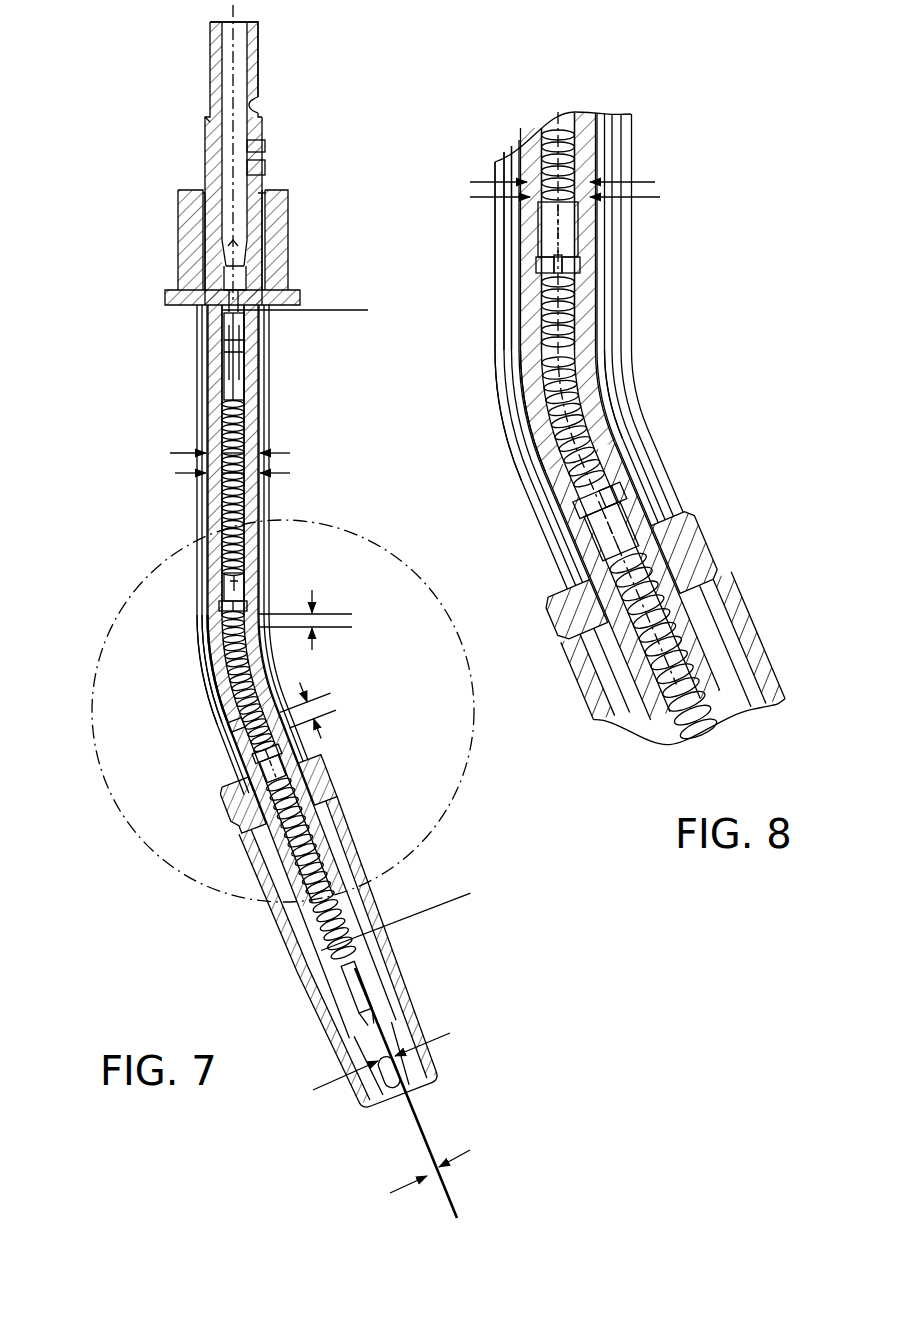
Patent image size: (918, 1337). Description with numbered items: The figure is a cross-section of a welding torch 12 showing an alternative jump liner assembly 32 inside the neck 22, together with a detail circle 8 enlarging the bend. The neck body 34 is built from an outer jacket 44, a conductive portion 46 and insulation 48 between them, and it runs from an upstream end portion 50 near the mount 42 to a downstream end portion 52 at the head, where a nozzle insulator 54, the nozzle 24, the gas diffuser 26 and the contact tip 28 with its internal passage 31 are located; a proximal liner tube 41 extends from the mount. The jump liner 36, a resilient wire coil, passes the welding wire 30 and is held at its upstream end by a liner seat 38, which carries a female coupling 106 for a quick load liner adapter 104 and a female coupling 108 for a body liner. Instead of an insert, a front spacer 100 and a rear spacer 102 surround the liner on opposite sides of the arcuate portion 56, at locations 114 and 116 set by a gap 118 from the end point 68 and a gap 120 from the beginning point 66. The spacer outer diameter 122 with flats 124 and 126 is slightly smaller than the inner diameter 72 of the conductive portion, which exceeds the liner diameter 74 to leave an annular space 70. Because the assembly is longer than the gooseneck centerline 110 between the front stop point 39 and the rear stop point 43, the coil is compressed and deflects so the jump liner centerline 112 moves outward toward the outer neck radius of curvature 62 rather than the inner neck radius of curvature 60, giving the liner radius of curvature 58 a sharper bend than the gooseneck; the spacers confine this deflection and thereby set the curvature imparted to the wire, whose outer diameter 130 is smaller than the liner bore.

In FIG. 7, the detail circle 8 is at (91, 668).
In FIG. 7, the welding torch 12 is at (99, 163).
In FIG. 8, the welding torch 12 is at (745, 128).
In FIG. 7, the neck 22 is at (286, 417).
In FIG. 8, the neck 22 is at (655, 139).
In FIG. 7, the nozzle 24 is at (345, 1046).
In FIG. 7, the gas diffuser 26 is at (350, 895).
In FIG. 7, the contact tip 28 is at (352, 1033).
In FIG. 7, the welding wire 30 is at (403, 1118).
In FIG. 7, the internal passage 31 is at (450, 1033).
In FIG. 7, the jump liner assembly 32 is at (221, 427).
In FIG. 8, the jump liner assembly 32 is at (555, 116).
In FIG. 7, the neck body 34 is at (274, 395).
In FIG. 8, the neck body 34 is at (634, 170).
In FIG. 7, the jump liner 36 is at (221, 533).
In FIG. 8, the jump liner 36 is at (582, 159).
In FIG. 7, the liner seat 38 is at (226, 294).
In FIG. 7, the front stop point 39 is at (456, 890).
In FIG. 7, the proximal tube 41 is at (257, 26).
In FIG. 7, the mount 42 is at (289, 257).
In FIG. 7, the rear stop point 43 is at (342, 314).
In FIG. 7, the outer jacket 44 is at (262, 207).
In FIG. 8, the outer jacket 44 is at (528, 138).
In FIG. 7, the conductive portion 46 is at (258, 88).
In FIG. 8, the conductive portion 46 is at (502, 162).
In FIG. 7, the insulation 48 is at (224, 248).
In FIG. 8, the insulation 48 is at (510, 150).
In FIG. 7, the upstream end portion 50 is at (272, 233).
In FIG. 7, the downstream end portion 52 is at (240, 993).
In FIG. 8, the downstream end portion 52 is at (782, 616).
In FIG. 7, the nozzle insulator 54 is at (340, 797).
In FIG. 7, the arcuate portion 56 is at (200, 692).
In FIG. 7, the liner radius of curvature 58 is at (198, 692).
In FIG. 8, the liner radius of curvature 58 is at (560, 430).
In FIG. 7, the inner neck radius of curvature 60 is at (207, 676).
In FIG. 8, the inner neck radius of curvature 60 is at (613, 322).
In FIG. 7, the outer neck radius of curvature 62 is at (220, 647).
In FIG. 8, the outer neck radius of curvature 62 is at (541, 380).
In FIG. 7, the beginning point 66 is at (352, 627).
In FIG. 7, the end point 68 is at (329, 692).
In FIG. 7, the space 70 is at (244, 423).
In FIG. 8, the space 70 is at (581, 117).
In FIG. 7, the diameter 72 is at (283, 453).
In FIG. 8, the diameter 72 is at (483, 182).
In FIG. 7, the diameter 74 is at (282, 475).
In FIG. 8, the diameter 74 is at (640, 199).
In FIG. 7, the front spacer 100 is at (262, 768).
In FIG. 8, the front spacer 100 is at (575, 508).
In FIG. 7, the rear spacer 102 is at (228, 585).
In FIG. 8, the rear spacer 102 is at (532, 267).
In FIG. 7, the quick load liner adapter 104 is at (223, 367).
In FIG. 7, the female coupling 106 is at (226, 306).
In FIG. 7, the female coupling 108 is at (224, 253).
In FIG. 7, the gooseneck centerline 110 is at (236, 58).
In FIG. 8, the gooseneck centerline 110 is at (632, 357).
In FIG. 7, the jump liner centerline 112 is at (206, 679).
In FIG. 8, the jump liner centerline 112 is at (520, 349).
In FIG. 7, the location 114 is at (336, 710).
In FIG. 7, the location 116 is at (352, 614).
In FIG. 7, the gap 118 is at (322, 736).
In FIG. 7, the gap 120 is at (318, 593).
In FIG. 7, the outer diameter 122 is at (248, 605).
In FIG. 8, the outer diameter 122 is at (583, 267).
In FIG. 7, the flat 124 is at (228, 728).
In FIG. 8, the flat 124 is at (604, 489).
In FIG. 7, the flat 126 is at (235, 581).
In FIG. 8, the flat 126 is at (556, 262).
In FIG. 7, the outer diameter 130 is at (468, 1152).